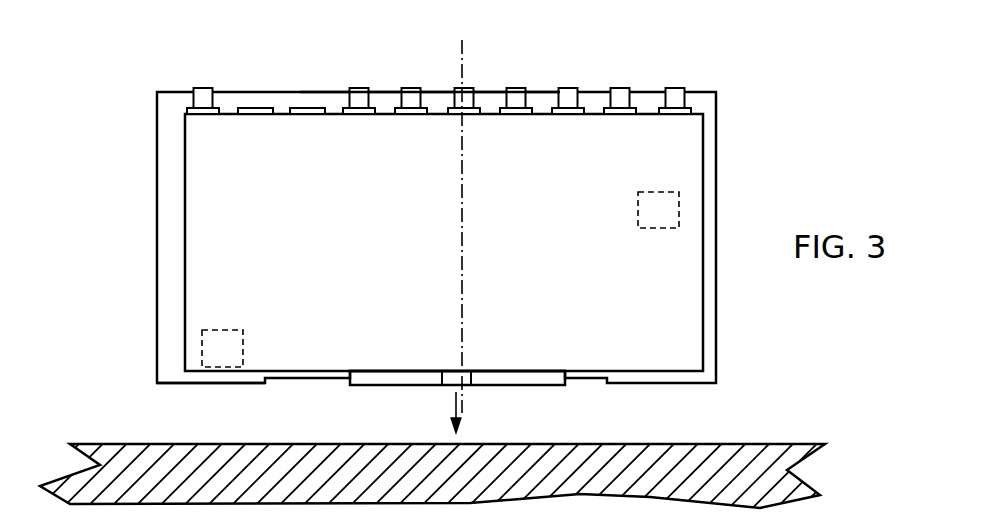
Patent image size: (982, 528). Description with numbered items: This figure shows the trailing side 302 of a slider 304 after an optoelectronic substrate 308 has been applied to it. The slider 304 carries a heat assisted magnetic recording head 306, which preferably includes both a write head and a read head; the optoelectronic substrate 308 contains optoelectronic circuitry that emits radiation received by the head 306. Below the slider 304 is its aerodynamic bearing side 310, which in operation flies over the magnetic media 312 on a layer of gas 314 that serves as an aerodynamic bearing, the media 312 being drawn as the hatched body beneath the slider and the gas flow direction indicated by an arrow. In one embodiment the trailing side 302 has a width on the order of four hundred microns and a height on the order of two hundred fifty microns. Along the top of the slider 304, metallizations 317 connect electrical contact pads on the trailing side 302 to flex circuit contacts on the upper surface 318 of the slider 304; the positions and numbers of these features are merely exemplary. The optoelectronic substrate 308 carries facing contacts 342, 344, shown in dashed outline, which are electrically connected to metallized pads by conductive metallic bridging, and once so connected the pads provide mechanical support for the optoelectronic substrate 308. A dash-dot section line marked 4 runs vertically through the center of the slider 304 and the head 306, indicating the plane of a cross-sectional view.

The trailing side 302 is at (182, 263).
The slider 304 is at (136, 165).
The heat assisted magnetic recording (HAMR) head 306 is at (466, 384).
The optoelectronic substrate 308 is at (577, 301).
The aerodynamic bearing side 310 is at (246, 410).
The magnetic media 312 is at (133, 425).
The layer of gas 314 is at (705, 414).
The metallizations 317 is at (203, 88).
The upper surface 318 is at (697, 60).
The facing contact 342 is at (672, 228).
The facing contact 344 is at (203, 343).
The section line 4-4' 4 is at (462, 42).